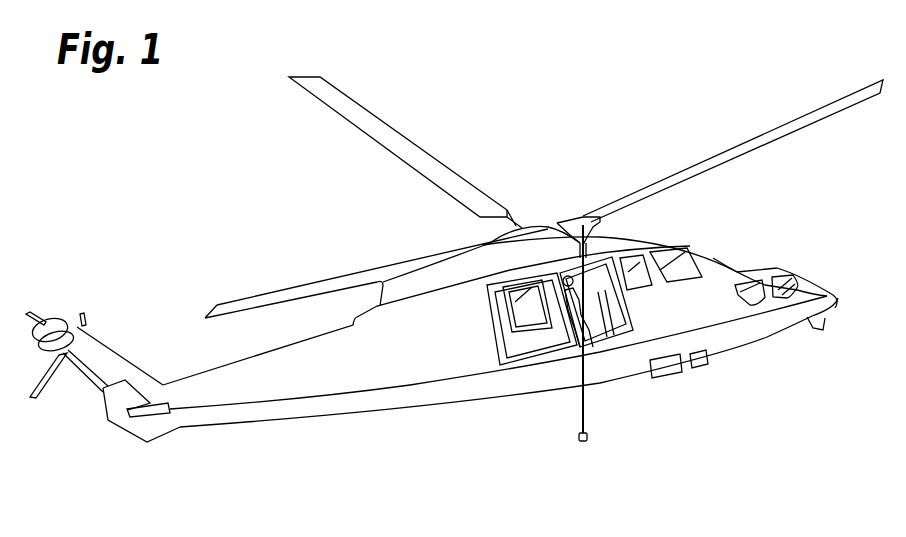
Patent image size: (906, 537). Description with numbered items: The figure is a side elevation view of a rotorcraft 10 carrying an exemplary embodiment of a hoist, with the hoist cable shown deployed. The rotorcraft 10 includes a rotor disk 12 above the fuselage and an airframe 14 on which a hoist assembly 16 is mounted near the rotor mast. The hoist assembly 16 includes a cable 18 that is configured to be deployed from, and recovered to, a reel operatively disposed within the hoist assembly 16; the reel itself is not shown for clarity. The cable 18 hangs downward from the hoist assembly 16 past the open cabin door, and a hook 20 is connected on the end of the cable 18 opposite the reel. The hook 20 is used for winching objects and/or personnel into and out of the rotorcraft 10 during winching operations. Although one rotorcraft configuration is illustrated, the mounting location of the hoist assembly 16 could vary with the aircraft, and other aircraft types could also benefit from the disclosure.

The rotorcraft 10 is at (228, 229).
The rotor disk 12 is at (457, 175).
The airframe 14 is at (444, 371).
The hoist assembly 16 is at (580, 225).
The cable 18 is at (588, 400).
The hook 20 is at (576, 437).